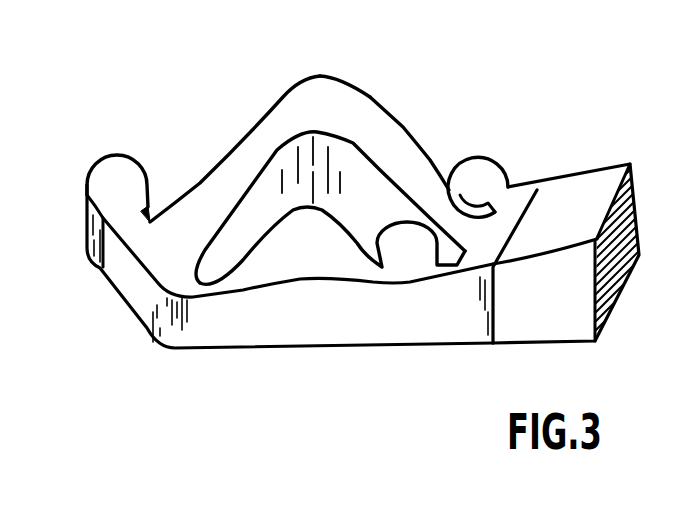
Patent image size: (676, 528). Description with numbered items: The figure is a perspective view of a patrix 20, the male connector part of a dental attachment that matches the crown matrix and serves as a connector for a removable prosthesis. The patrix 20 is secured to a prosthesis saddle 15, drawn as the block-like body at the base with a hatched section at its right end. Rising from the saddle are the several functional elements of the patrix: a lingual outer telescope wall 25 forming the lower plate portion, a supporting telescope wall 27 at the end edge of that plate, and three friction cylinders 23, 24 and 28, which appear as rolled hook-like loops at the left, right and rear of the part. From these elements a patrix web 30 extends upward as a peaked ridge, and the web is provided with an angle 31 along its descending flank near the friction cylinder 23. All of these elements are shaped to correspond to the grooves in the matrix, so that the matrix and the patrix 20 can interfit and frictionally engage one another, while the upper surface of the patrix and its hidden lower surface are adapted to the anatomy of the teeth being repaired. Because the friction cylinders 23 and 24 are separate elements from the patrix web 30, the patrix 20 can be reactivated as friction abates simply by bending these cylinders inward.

The prosthesis saddle 15 is at (553, 320).
The patrix 20 is at (192, 122).
The friction cylinder 23 is at (475, 180).
The friction cylinder 24 is at (108, 172).
The lingual outer telescope wall 25 is at (275, 313).
The supporting telescope wall 27 is at (488, 250).
The friction cylinder 28 is at (415, 240).
The patrix web 30 is at (358, 122).
The angle 31 is at (434, 166).